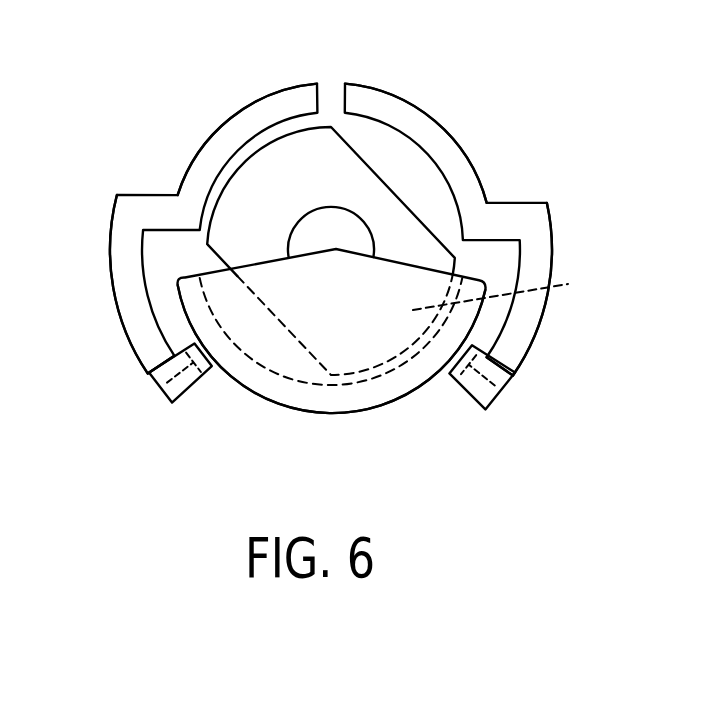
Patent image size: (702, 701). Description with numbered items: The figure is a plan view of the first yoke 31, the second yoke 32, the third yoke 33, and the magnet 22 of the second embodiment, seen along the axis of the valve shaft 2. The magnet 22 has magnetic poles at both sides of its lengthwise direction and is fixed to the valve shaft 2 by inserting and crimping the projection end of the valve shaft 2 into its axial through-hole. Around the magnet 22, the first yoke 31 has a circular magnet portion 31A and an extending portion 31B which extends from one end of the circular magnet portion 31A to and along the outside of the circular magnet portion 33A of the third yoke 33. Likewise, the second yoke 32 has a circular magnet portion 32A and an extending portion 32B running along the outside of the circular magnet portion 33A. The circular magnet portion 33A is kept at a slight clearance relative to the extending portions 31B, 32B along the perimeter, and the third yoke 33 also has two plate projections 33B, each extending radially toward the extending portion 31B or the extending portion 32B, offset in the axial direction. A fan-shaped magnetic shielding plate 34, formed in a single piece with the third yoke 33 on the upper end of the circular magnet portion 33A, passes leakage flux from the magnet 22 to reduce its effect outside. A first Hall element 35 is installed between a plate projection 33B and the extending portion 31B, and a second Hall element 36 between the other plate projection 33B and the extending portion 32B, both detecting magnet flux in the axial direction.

The valve shaft 2 is at (347, 232).
The magnet 22 is at (320, 140).
The first yoke 31 is at (455, 228).
The circular magnet portion 31A is at (395, 113).
The extending portion 31B is at (523, 340).
The second yoke 32 is at (207, 249).
The circular magnet portion 32A is at (182, 197).
The extending portion 32B is at (147, 337).
The third yoke 33 is at (326, 364).
The circular magnet portion 33A is at (382, 394).
The plate projection 33B is at (201, 376).
The magnetic shielding plate 34 is at (508, 288).
The first Hall element 35 is at (486, 416).
The second Hall element 36 is at (170, 405).